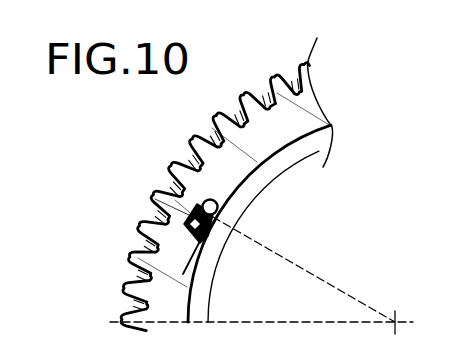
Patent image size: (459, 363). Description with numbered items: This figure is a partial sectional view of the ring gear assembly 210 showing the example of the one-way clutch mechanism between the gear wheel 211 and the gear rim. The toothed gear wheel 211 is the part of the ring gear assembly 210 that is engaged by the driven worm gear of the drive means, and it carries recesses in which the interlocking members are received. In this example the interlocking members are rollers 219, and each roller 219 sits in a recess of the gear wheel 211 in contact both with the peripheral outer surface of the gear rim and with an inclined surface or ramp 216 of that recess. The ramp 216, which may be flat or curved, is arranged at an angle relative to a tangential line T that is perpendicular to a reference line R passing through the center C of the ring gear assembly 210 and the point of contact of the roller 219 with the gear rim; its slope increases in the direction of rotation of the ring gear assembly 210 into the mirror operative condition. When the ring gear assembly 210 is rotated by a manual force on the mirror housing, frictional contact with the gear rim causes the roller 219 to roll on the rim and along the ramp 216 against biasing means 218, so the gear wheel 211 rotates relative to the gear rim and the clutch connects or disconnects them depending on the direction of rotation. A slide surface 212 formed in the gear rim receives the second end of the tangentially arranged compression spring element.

The ring gear assembly 210 is at (254, 77).
The gear wheel 211 is at (283, 80).
The slide surface 212 is at (210, 229).
The inclined surface or ramp 216 is at (153, 199).
The biasing means 218 is at (138, 223).
The roller 219 is at (203, 200).
The tangential line T is at (238, 182).
The reference line R is at (284, 256).
The center C is at (395, 322).